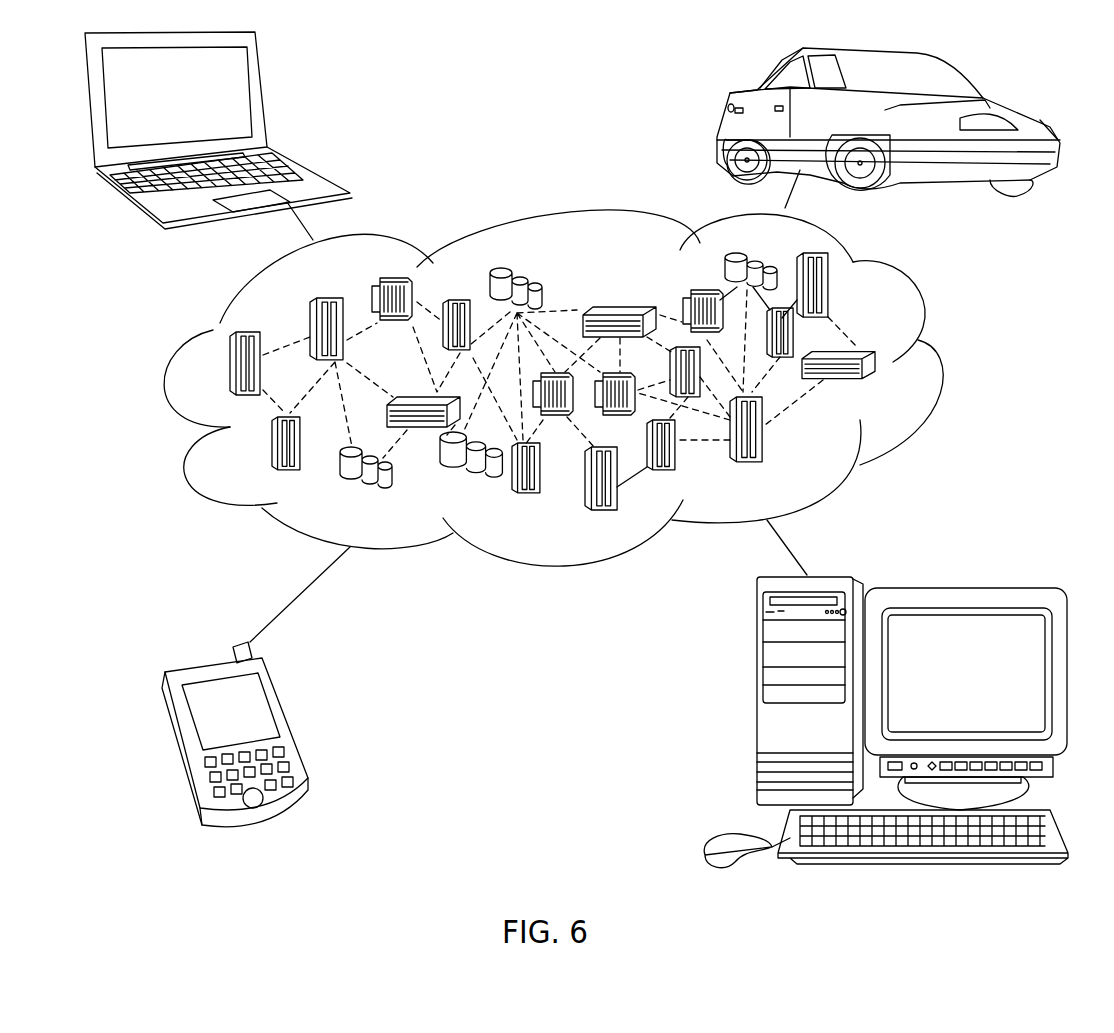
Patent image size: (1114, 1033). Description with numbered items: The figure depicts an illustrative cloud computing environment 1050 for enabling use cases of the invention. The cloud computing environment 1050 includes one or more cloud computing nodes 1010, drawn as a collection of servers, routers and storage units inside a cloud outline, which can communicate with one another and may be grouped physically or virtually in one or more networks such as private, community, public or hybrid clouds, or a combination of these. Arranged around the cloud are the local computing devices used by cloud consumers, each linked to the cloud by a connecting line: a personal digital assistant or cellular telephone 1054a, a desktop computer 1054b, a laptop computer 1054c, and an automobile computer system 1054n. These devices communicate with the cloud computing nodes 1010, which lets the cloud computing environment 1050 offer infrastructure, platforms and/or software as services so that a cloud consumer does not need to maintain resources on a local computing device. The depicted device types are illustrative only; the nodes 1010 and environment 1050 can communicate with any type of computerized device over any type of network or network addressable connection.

The cloud computing environment 1050 is at (927, 305).
The cloud computing nodes 1010 is at (892, 385).
The personal digital assistant or cellular telephone 1054a is at (287, 717).
The desktop computer 1054b is at (757, 705).
The laptop computer 1054c is at (263, 88).
The automobile computer system 1054n is at (727, 97).